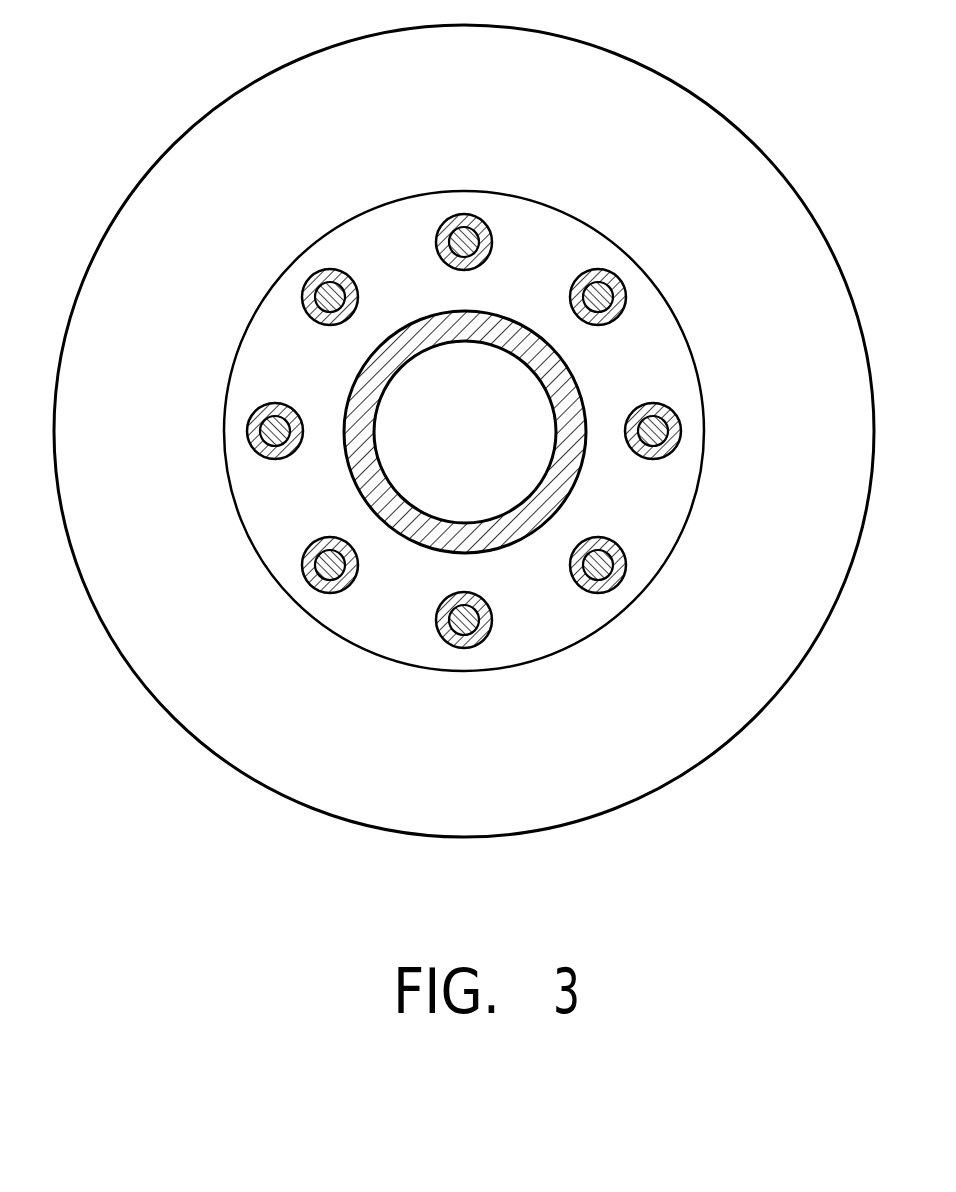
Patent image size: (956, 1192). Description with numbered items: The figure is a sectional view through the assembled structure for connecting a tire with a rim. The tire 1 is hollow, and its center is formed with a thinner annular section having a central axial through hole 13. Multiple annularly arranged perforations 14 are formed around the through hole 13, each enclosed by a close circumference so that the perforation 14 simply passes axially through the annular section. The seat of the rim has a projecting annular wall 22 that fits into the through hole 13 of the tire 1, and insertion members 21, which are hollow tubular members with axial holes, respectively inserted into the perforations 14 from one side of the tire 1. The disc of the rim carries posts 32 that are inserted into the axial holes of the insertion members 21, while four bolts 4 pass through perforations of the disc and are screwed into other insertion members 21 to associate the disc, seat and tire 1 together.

The tire 1 is at (710, 197).
The bolt 4 is at (585, 593).
The central axial through hole 13 is at (475, 475).
The perforation 14 is at (438, 237).
The insertion member 21 is at (507, 242).
The projecting annular wall 22 is at (562, 465).
The post 32 is at (467, 218).